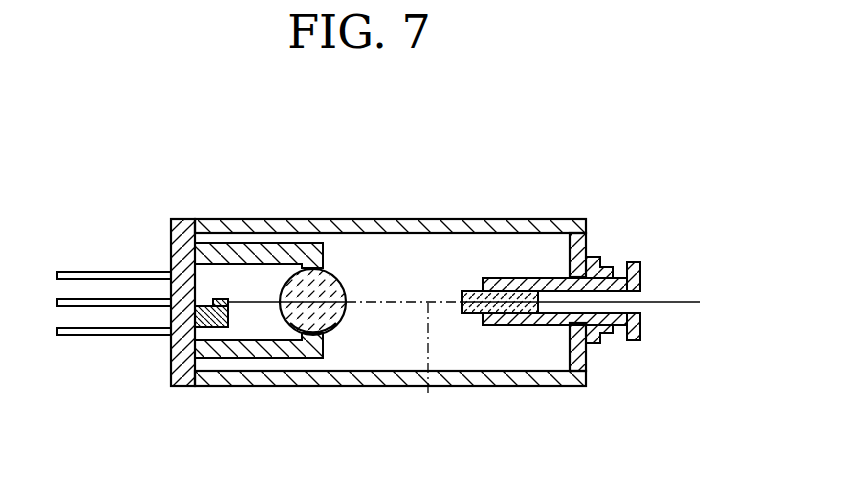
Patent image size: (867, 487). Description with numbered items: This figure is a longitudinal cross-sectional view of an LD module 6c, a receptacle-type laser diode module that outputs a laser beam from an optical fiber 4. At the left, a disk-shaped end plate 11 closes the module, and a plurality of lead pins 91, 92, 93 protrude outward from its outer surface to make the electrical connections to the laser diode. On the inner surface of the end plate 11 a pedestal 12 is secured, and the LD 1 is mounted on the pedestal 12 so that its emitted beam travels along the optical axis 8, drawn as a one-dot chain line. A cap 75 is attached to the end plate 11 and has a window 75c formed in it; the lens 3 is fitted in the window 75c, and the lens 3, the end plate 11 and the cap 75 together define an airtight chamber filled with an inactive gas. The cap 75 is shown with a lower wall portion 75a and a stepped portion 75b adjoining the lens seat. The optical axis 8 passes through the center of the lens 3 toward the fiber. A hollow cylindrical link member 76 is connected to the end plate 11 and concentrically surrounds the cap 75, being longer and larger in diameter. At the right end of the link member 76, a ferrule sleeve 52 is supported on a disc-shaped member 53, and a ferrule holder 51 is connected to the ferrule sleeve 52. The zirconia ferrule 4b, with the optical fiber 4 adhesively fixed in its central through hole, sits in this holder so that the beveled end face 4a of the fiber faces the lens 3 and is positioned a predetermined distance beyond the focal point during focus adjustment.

The LD 1 is at (223, 299).
The lens 3 is at (335, 270).
The optical fiber 4 is at (660, 298).
The end face 4a is at (462, 297).
The ferrule 4b is at (472, 313).
The LD module 6c is at (394, 183).
The optical axis 8 is at (404, 359).
The end plate 11 is at (173, 387).
The pedestal 12 is at (205, 306).
The ferrule holder 51 is at (525, 324).
The ferrule sleeve 52 is at (592, 348).
The disc-shaped member 53 is at (588, 248).
The cap 75 is at (265, 258).
The holder lower portion 75a is at (227, 352).
The holder step portion 75b is at (330, 350).
The window 75c is at (337, 328).
The link member 76 is at (283, 388).
The lead pin 91 is at (83, 272).
The lead pin 92 is at (134, 299).
The lead pin 93 is at (112, 336).